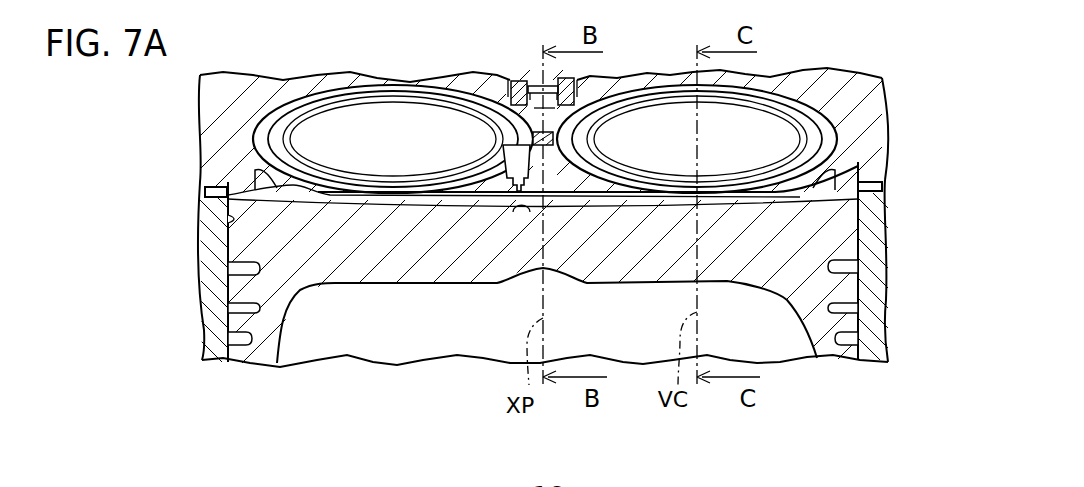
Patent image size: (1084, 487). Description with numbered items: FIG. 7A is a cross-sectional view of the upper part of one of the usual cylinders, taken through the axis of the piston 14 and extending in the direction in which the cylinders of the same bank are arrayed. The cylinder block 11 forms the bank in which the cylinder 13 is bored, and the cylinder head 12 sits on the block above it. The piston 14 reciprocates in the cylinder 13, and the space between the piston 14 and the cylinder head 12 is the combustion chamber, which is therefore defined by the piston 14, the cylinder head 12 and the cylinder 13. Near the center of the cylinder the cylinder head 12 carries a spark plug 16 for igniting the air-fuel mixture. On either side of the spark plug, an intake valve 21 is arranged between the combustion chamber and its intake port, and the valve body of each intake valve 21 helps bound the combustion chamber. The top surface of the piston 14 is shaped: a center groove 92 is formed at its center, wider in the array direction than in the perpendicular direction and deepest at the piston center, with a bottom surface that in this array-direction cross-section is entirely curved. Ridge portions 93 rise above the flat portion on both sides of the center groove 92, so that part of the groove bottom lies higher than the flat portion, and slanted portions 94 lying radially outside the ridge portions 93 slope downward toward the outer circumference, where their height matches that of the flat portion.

The cylinder block 11 is at (883, 345).
The cylinder head 12 is at (872, 100).
The cylinder 13 is at (236, 222).
The piston 14 is at (884, 292).
The spark plug 16 is at (530, 76).
The intake valve 21 is at (343, 122).
The center groove 92 is at (520, 208).
The ridge portion 93 is at (236, 177).
The slanted portion 94 is at (207, 189).